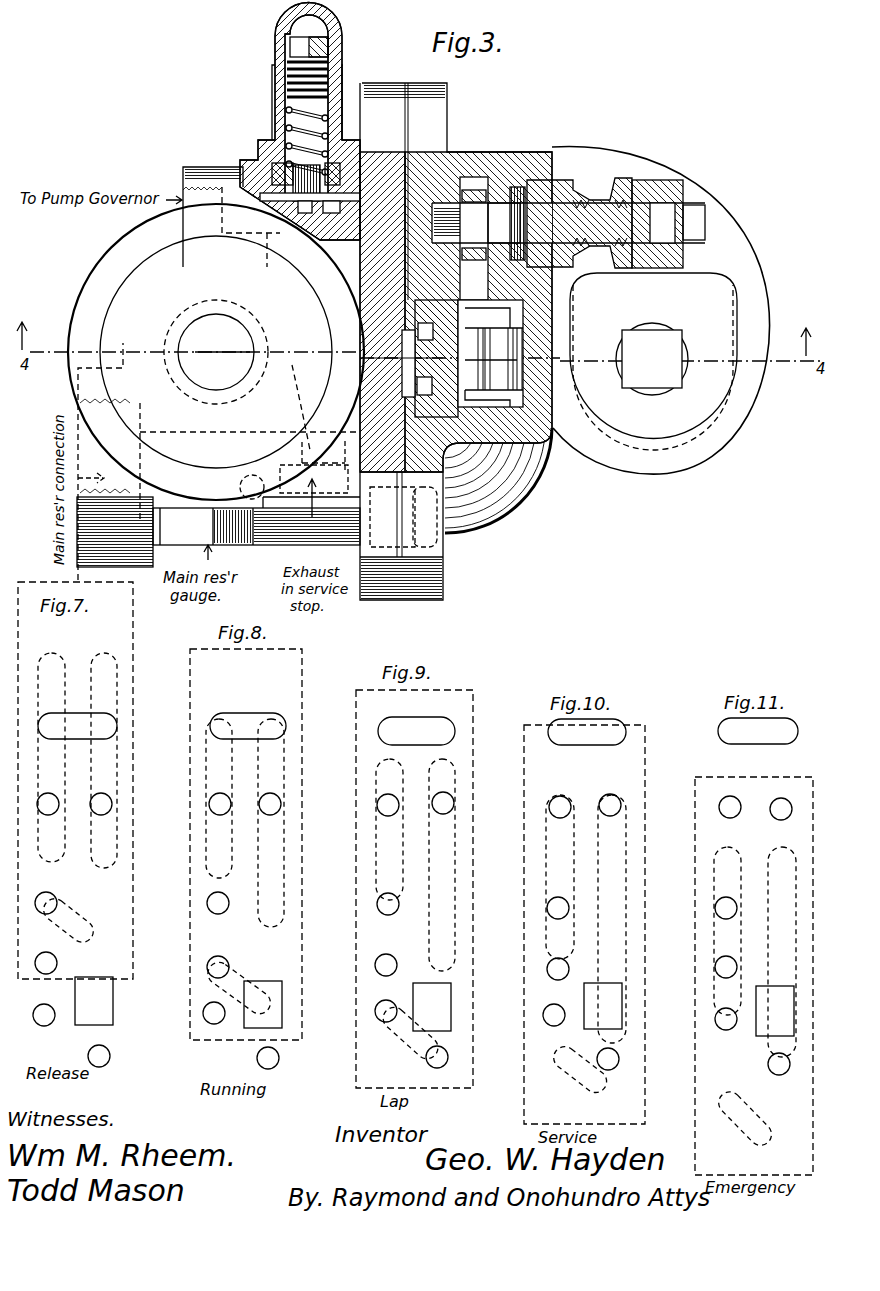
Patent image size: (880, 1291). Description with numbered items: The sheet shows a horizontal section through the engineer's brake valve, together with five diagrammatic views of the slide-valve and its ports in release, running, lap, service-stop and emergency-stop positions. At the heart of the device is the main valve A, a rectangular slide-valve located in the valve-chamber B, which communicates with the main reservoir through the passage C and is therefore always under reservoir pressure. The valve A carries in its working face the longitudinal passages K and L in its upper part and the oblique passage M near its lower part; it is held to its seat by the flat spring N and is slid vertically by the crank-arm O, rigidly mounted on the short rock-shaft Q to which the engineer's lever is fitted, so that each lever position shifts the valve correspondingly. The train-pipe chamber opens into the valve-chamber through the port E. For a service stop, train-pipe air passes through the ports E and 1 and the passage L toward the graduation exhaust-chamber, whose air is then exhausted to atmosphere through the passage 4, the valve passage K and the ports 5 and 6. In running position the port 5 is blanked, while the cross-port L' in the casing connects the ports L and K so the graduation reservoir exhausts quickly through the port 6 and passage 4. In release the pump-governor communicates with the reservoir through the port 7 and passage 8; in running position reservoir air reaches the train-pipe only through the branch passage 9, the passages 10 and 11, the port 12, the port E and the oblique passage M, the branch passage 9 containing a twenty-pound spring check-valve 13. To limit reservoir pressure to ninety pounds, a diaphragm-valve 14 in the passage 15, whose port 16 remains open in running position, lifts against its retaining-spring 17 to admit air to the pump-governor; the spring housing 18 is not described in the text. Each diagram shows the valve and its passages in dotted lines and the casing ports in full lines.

In FIG. 3, the port 1 is at (474, 258).
In FIG. 7, the port 1 is at (112, 801).
In FIG. 8, the port 1 is at (288, 795).
In FIG. 9, the port 1 is at (432, 803).
In FIG. 10, the port 1 is at (602, 800).
In FIG. 11, the port 1 is at (784, 818).
In FIG. 3, the passage 4 is at (219, 383).
In FIG. 7, the port 5 is at (50, 895).
In FIG. 8, the port 5 is at (229, 900).
In FIG. 9, the port 5 is at (399, 906).
In FIG. 10, the port 5 is at (569, 908).
In FIG. 11, the port 5 is at (737, 908).
In FIG. 7, the port 6 is at (59, 804).
In FIG. 8, the port 6 is at (231, 804).
In FIG. 9, the port 6 is at (377, 803).
In FIG. 10, the port 6 is at (566, 791).
In FIG. 11, the port 6 is at (740, 803).
In FIG. 7, the port 7 is at (39, 1007).
In FIG. 8, the port 7 is at (205, 1008).
In FIG. 9, the port 7 is at (379, 1006).
In FIG. 10, the port 7 is at (554, 1004).
In FIG. 11, the port 7 is at (720, 1030).
In FIG. 3, the passage 8 is at (294, 314).
In FIG. 3, the by-pass or branch passage 9 is at (308, 479).
In FIG. 3, the passage 10 is at (240, 488).
In FIG. 3, the passage 11 is at (358, 456).
In FIG. 7, the port 12 is at (44, 955).
In FIG. 8, the port 12 is at (218, 958).
In FIG. 9, the port 12 is at (387, 950).
In FIG. 10, the port 12 is at (568, 964).
In FIG. 3, the twenty-pound spring check-valve 13 is at (256, 531).
In FIG. 3, the diaphragm-valve 14 is at (262, 162).
In FIG. 3, the passage 15 is at (318, 217).
In FIG. 7, the port 16 is at (110, 1055).
In FIG. 8, the port 16 is at (279, 1058).
In FIG. 9, the port 16 is at (448, 1059).
In FIG. 10, the port 16 is at (615, 1068).
In FIG. 11, the port 16 is at (773, 1072).
In FIG. 3, the retaining-spring 17 is at (290, 118).
In FIG. 3, the spring casing 18 is at (278, 141).
In FIG. 3, the main valve A is at (407, 352).
In FIG. 3, the valve-chamber B is at (488, 356).
In FIG. 3, the passage C is at (473, 500).
In FIG. 7, the port E is at (94, 1001).
In FIG. 8, the port E is at (266, 983).
In FIG. 9, the port E is at (432, 1007).
In FIG. 10, the port E is at (612, 1005).
In FIG. 11, the port E is at (775, 1011).
In FIG. 3, the longitudinal passage K is at (424, 386).
In FIG. 7, the longitudinal passage K is at (62, 660).
In FIG. 8, the longitudinal passage K is at (228, 757).
In FIG. 9, the longitudinal passage K is at (397, 842).
In FIG. 10, the longitudinal passage K is at (568, 844).
In FIG. 11, the longitudinal passage K is at (739, 870).
In FIG. 3, the longitudinal passage L is at (404, 338).
In FIG. 7, the longitudinal passage L is at (104, 752).
In FIG. 8, the longitudinal passage L is at (289, 823).
In FIG. 9, the longitudinal passage L is at (431, 865).
In FIG. 10, the longitudinal passage L is at (602, 919).
In FIG. 11, the longitudinal passage L is at (772, 952).
In FIG. 7, the cross-port L' is at (77, 717).
In FIG. 8, the cross-port L' is at (248, 716).
In FIG. 9, the cross-port L' is at (416, 722).
In FIG. 10, the cross-port L' is at (587, 742).
In FIG. 11, the cross-port L' is at (758, 741).
In FIG. 7, the oblique or angular passage M is at (83, 917).
In FIG. 8, the oblique or angular passage M is at (238, 973).
In FIG. 9, the oblique or angular passage M is at (401, 1035).
In FIG. 10, the oblique or angular passage M is at (565, 1070).
In FIG. 11, the oblique or angular passage M is at (732, 1125).
In FIG. 3, the flat spring N is at (490, 353).
In FIG. 3, the crank-arm O is at (474, 238).
In FIG. 3, the rock-shaft Q is at (568, 223).